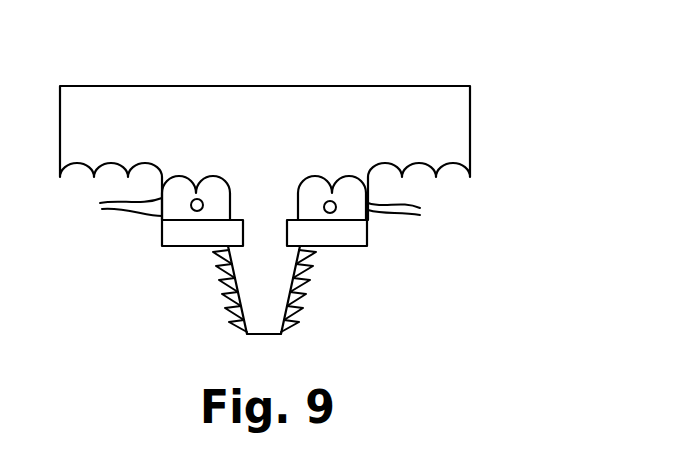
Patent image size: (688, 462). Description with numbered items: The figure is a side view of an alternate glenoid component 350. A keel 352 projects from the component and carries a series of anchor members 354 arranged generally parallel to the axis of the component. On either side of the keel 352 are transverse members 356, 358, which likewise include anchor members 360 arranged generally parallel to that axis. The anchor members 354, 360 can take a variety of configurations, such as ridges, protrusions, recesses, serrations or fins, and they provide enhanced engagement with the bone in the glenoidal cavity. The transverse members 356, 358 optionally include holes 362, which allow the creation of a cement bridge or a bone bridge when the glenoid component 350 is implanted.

The glenoid component 350 is at (300, 220).
The keel 352 is at (247, 311).
The anchor members 354 is at (232, 258).
The transverse member 356 is at (162, 221).
The transverse member 358 is at (345, 212).
The anchor members 360 is at (261, 207).
The holes 362 is at (192, 212).